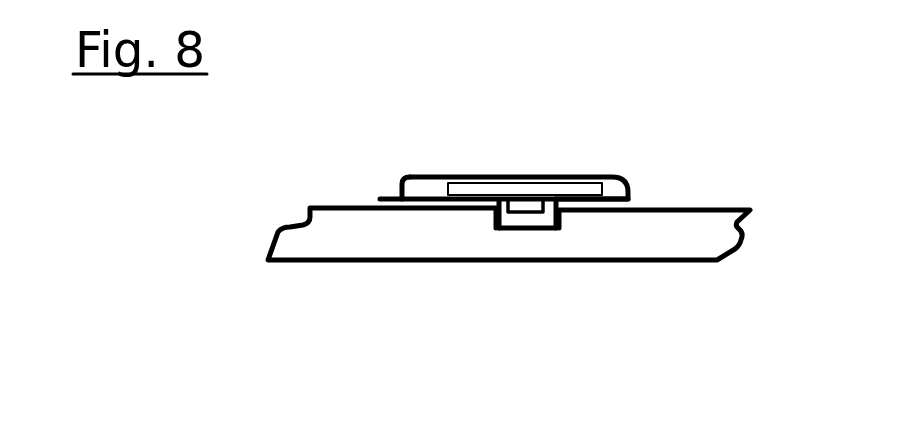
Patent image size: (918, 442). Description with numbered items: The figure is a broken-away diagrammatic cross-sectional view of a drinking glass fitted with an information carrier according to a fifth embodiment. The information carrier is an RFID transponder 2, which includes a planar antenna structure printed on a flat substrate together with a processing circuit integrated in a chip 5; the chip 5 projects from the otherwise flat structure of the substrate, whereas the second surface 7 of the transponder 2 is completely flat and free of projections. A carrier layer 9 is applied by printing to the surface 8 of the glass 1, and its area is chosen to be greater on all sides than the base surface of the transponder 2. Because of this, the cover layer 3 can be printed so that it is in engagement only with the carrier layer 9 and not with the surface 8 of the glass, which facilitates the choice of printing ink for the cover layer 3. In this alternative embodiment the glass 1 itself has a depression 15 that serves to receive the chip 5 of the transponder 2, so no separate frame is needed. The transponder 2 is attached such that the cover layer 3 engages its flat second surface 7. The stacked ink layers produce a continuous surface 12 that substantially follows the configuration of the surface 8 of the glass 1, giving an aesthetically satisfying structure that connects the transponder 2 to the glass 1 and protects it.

The glass 1 is at (630, 248).
The transponder 2 is at (523, 194).
The cover layer 3 is at (625, 173).
The chip 5 is at (524, 208).
The second surface 7 is at (472, 175).
The surface 8 is at (341, 204).
The carrier layer 9 is at (595, 199).
The continuous surface 12 is at (413, 175).
The depression 15 is at (497, 229).